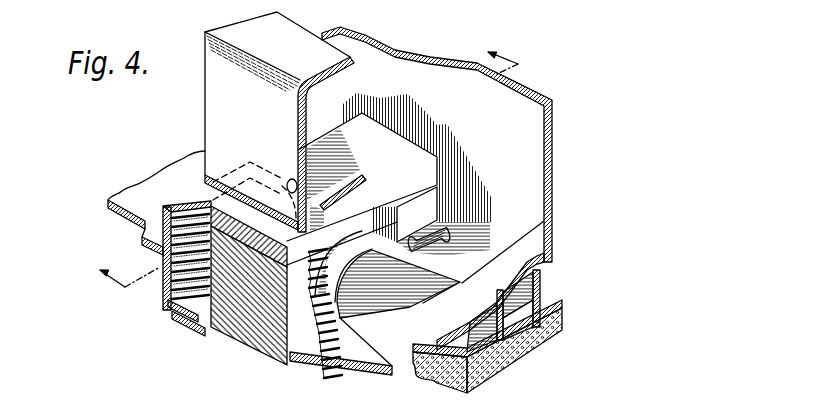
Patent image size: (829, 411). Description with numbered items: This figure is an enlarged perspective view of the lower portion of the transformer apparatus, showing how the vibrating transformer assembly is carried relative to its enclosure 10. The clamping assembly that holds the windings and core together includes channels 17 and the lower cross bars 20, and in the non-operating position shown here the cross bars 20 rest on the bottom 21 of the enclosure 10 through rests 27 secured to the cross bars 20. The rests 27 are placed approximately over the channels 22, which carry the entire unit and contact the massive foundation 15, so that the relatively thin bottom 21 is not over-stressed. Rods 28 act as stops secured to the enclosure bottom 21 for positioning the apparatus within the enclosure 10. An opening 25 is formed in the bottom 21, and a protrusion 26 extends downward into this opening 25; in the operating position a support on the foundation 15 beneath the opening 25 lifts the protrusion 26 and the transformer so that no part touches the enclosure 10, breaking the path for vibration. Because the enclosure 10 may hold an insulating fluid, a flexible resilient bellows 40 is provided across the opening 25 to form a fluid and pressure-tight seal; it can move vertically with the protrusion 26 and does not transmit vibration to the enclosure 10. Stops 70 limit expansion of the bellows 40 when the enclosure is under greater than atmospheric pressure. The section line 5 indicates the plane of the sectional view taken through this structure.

The section line 5- 5 is at (297, 163).
The enclosure 10 is at (552, 163).
The foundation 15 is at (562, 327).
The channels 17 is at (213, 116).
The lower cross bars 20 is at (406, 164).
The bottom 21 is at (518, 253).
The channels 22 is at (545, 280).
The opening 25 is at (413, 303).
The protrusion 26 is at (245, 318).
The rests 27 is at (425, 231).
The rods 28 is at (447, 239).
The bellows 40 is at (160, 270).
The stops 70 is at (187, 310).